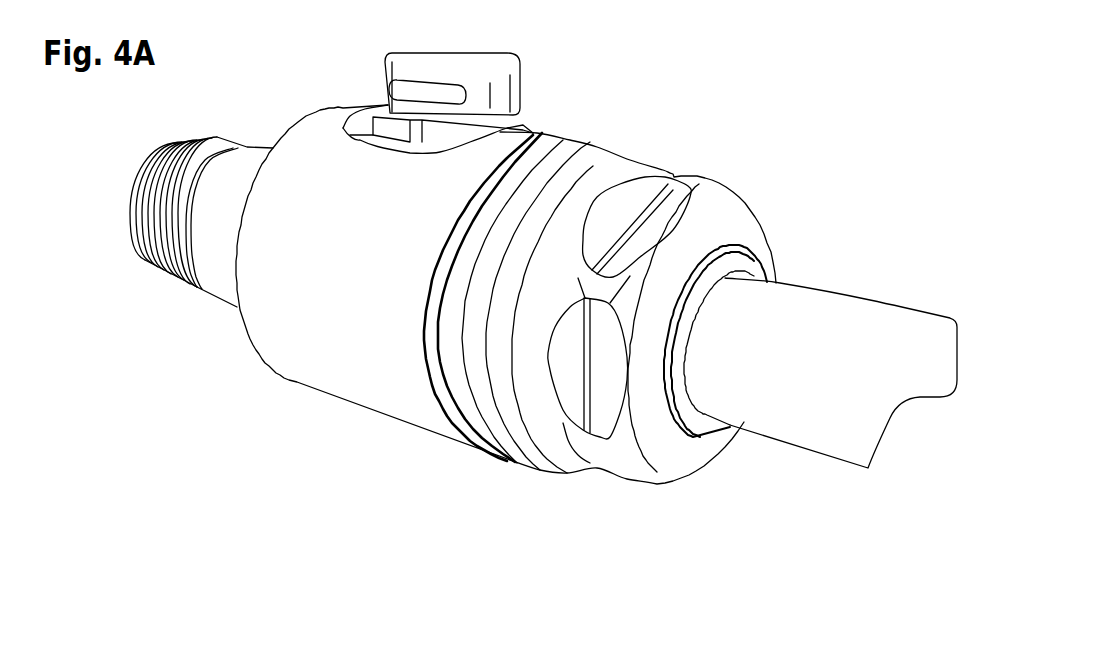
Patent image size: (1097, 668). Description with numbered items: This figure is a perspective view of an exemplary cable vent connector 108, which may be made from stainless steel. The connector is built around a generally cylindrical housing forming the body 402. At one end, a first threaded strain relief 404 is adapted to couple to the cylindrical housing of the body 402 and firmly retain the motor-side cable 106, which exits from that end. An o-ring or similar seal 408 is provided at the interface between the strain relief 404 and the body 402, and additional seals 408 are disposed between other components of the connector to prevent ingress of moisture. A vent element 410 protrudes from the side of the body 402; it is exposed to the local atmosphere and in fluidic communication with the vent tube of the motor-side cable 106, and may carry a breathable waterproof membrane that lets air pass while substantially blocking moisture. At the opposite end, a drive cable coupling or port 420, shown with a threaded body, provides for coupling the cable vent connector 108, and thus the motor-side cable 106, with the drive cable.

The motor-side cable 106 is at (857, 393).
The cable vent connector 108 is at (176, 484).
The body 402 is at (350, 152).
The first threaded strain relief 404 is at (653, 172).
The seal 408 is at (527, 147).
The vent element 410 is at (408, 60).
The drive cable coupling or port 420 is at (153, 243).